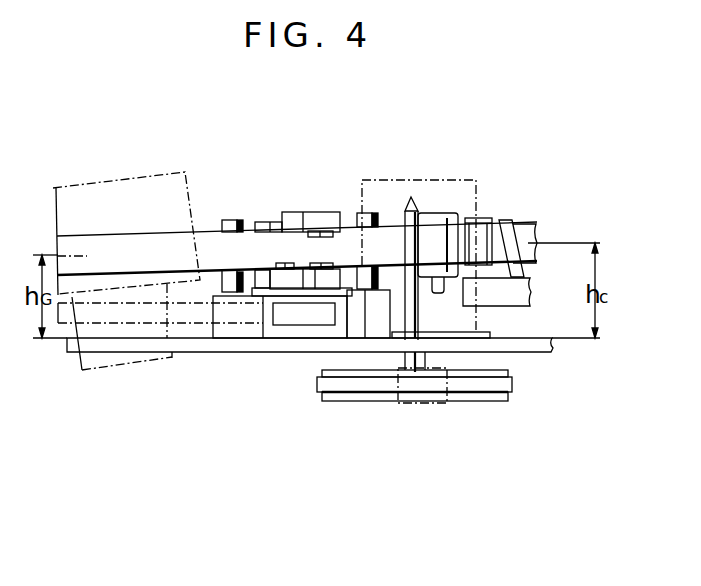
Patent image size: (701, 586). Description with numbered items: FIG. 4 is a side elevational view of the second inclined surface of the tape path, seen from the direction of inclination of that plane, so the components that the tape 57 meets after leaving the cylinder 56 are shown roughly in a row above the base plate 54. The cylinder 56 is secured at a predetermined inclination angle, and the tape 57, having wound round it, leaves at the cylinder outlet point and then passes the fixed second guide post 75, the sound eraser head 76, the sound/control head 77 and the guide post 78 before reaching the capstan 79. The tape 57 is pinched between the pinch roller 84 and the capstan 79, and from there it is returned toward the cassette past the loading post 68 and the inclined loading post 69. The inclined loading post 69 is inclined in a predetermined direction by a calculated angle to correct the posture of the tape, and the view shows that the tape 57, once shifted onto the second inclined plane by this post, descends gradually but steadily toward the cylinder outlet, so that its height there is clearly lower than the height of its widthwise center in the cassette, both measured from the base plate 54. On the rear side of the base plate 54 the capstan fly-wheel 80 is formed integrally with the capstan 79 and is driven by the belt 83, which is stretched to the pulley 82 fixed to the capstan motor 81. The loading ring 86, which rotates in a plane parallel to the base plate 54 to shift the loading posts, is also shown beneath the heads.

The base plate 54 is at (540, 348).
The cylinder 56 is at (137, 188).
The tape 57 is at (209, 232).
The loading post 68 is at (487, 218).
The inclined loading post 69 is at (535, 237).
The fixed second guide post 75 is at (237, 219).
The sound eraser head 76 is at (278, 221).
The sound/control head 77 is at (322, 216).
The guide post 78 is at (375, 212).
The capstan 79 is at (417, 310).
The capstan fly-wheel 80 is at (492, 396).
The capstan motor 81 is at (480, 178).
The pulley 82 is at (405, 403).
The belt 83 is at (508, 380).
The pinch roller 84 is at (438, 222).
The loading ring 86 is at (288, 315).